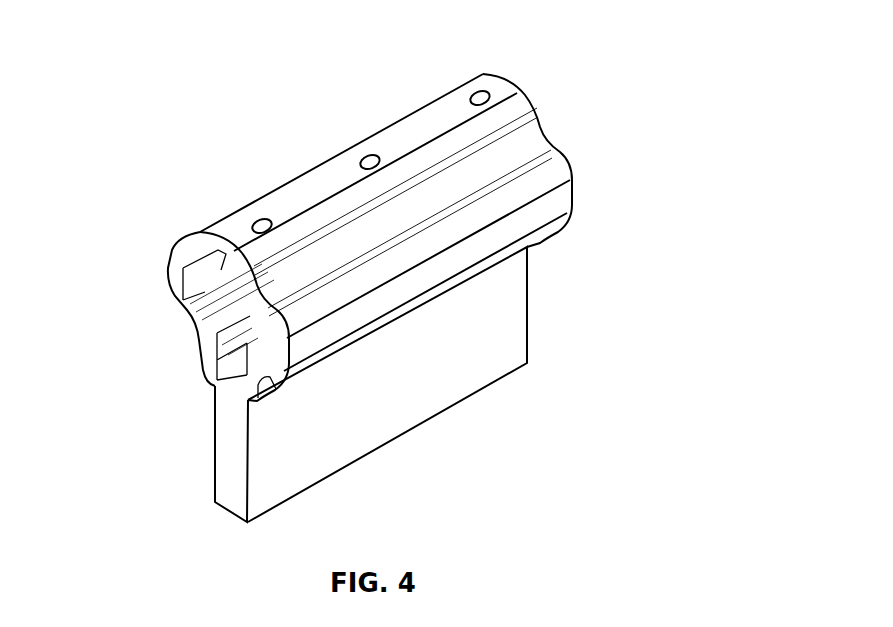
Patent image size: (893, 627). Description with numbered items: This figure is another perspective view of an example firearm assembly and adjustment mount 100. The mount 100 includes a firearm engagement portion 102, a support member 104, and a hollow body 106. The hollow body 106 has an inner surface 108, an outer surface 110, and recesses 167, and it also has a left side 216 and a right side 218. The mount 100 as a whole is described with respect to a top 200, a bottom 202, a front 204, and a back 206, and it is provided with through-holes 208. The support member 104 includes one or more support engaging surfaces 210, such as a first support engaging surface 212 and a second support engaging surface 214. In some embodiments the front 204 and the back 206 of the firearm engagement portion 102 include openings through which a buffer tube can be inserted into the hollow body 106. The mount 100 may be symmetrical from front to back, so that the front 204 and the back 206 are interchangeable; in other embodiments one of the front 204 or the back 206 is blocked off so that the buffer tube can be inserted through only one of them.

The firearm assembly and adjustment mount 100 is at (213, 66).
The top 200 is at (363, 106).
The firearm engagement portion 102 is at (443, 125).
The through-holes 208 is at (482, 92).
The back 206 is at (581, 92).
The outer surface 110 is at (545, 178).
The left side 216 is at (558, 230).
The right side 218 is at (167, 275).
The inner surface 108 is at (188, 302).
The hollow body 106 is at (243, 311).
The front 204 is at (146, 386).
The second support engaging surface 214 is at (213, 405).
The bottom 202 is at (379, 512).
The first support engaging surface 212 is at (503, 330).
The support member 104 is at (467, 365).
The support engaging surfaces 210 is at (387, 402).
The recesses 167 is at (272, 378).